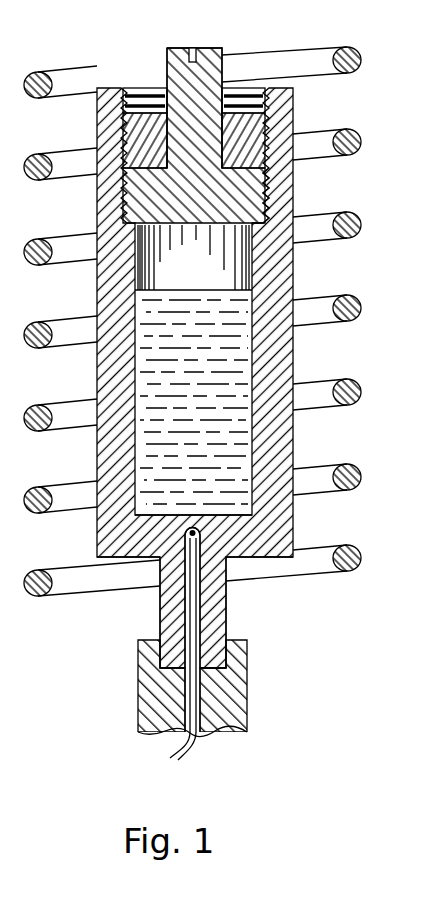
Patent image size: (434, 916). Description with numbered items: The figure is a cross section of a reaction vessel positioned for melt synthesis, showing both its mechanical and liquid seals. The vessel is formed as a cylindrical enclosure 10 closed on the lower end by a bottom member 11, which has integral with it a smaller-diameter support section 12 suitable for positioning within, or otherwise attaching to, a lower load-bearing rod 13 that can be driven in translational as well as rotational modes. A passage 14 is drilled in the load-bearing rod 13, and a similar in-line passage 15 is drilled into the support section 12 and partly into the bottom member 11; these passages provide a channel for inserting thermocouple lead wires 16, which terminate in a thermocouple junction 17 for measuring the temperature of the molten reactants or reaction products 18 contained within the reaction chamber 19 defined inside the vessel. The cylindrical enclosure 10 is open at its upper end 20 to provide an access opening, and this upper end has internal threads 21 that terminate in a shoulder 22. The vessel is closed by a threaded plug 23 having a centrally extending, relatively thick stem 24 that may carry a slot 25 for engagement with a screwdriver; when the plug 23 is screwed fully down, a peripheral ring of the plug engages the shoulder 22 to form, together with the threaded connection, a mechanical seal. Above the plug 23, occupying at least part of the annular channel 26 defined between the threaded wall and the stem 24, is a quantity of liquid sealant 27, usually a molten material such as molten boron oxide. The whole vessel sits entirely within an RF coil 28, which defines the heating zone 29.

The cylindrical enclosure 10 is at (280, 278).
The bottom member 11 is at (253, 540).
The support section 12 is at (221, 629).
The lower load-bearing rod 13 is at (237, 671).
The passage 14 is at (188, 706).
The in-line passage 15 is at (188, 601).
The thermocouple lead wires 16 is at (190, 626).
The thermocouple junction 17 is at (186, 531).
The molten reactants or reaction products 18 is at (237, 357).
The reaction chamber 19 is at (160, 275).
The upper end 20 is at (272, 80).
The internal threads 21 is at (266, 183).
The shoulder 22 is at (263, 232).
The threaded plug 23 is at (147, 206).
The stem 24 is at (210, 67).
The slot 25 is at (195, 50).
The annular channel 26 is at (143, 101).
The liquid sealant 27 is at (148, 128).
The RF coil 28 is at (352, 306).
The heating zone 29 is at (310, 440).